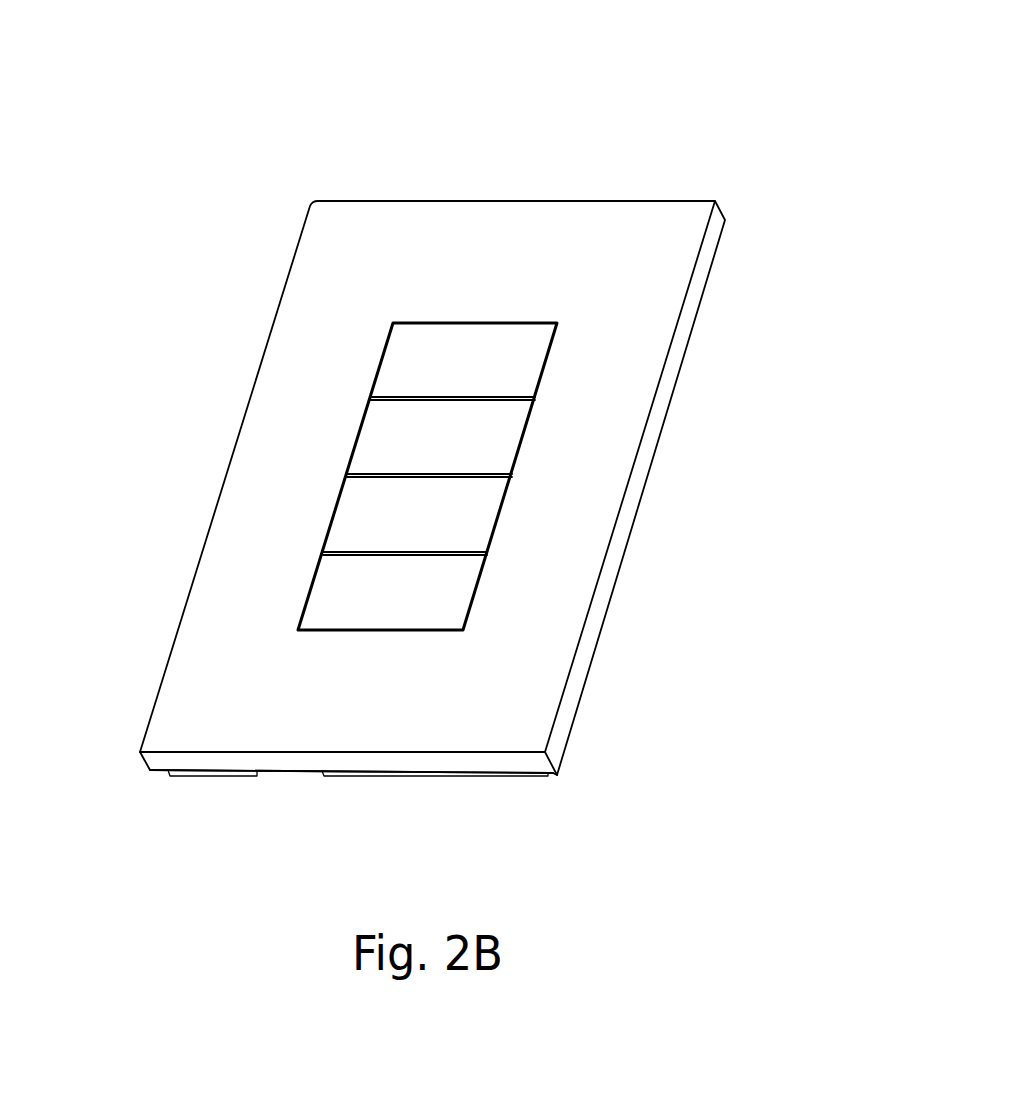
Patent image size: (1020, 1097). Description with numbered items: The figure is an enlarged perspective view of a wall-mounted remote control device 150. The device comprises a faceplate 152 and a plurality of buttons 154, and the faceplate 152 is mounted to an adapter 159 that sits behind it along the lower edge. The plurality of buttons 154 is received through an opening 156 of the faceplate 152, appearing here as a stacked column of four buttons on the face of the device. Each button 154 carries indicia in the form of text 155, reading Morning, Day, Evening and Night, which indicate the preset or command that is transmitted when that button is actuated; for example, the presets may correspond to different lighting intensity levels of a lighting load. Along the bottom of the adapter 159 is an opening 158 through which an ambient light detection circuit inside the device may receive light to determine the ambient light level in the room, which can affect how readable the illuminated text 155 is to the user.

The wall-mounted remote control device 150 is at (497, 137).
The faceplate 152 is at (312, 278).
The buttons 154 is at (517, 363).
The text 155 is at (368, 338).
The opening 156 is at (360, 632).
The opening 158 is at (297, 773).
The adapter 159 is at (462, 775).